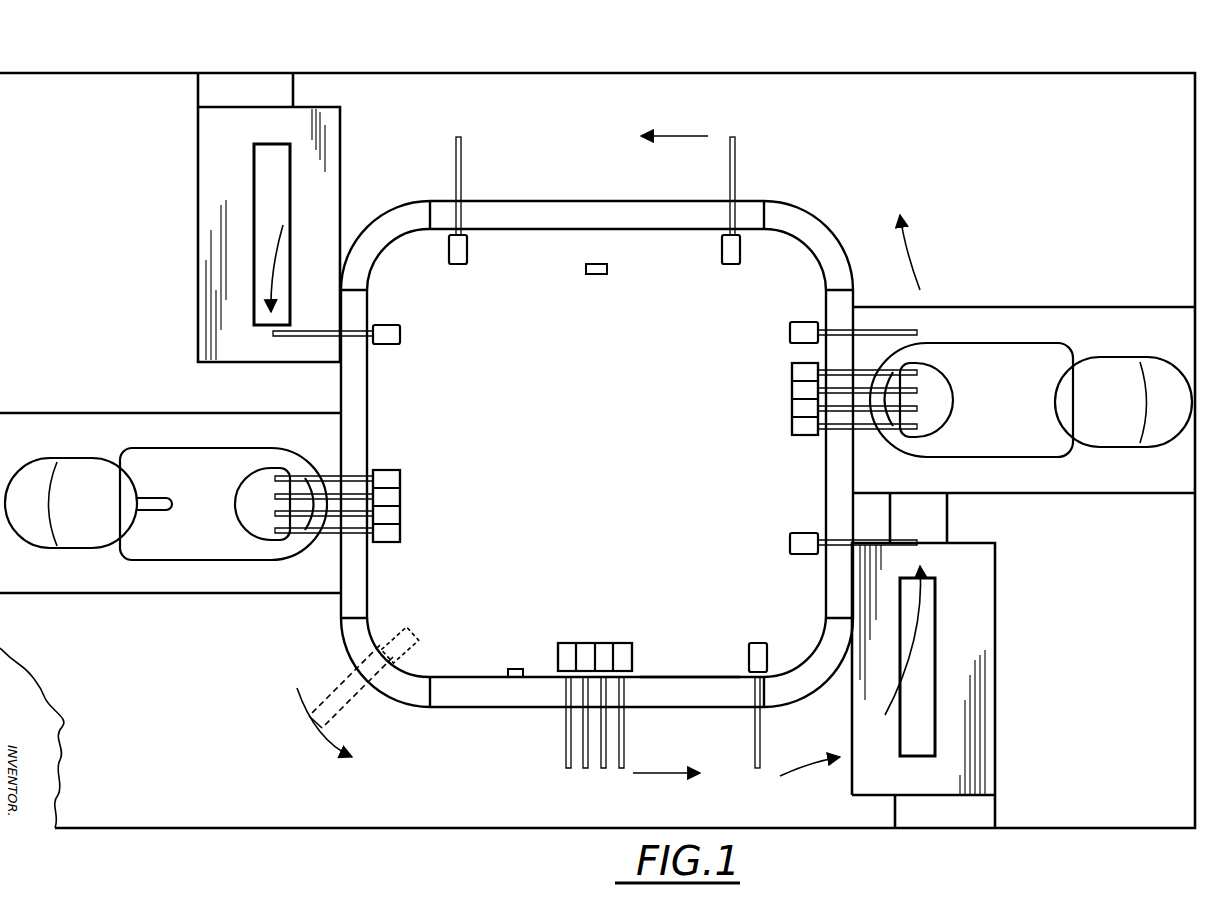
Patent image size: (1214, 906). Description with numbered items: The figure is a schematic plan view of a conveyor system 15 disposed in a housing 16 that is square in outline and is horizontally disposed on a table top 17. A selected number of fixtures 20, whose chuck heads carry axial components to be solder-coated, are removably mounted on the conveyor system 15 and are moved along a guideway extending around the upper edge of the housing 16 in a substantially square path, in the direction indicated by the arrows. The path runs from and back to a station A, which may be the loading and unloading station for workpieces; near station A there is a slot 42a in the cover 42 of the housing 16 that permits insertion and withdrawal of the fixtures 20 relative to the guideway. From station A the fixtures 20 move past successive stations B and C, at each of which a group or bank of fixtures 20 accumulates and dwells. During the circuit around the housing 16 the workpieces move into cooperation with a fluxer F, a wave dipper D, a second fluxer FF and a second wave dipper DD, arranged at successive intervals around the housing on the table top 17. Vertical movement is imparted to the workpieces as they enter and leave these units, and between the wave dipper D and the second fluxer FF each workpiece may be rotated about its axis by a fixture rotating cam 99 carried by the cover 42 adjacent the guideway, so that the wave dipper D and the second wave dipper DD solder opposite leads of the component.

The conveyor system 15 is at (500, 684).
The housing 16 is at (688, 682).
The table top 17 is at (958, 159).
The fixtures 20 is at (720, 259).
The cover 42 is at (622, 473).
The slot 42a is at (508, 668).
The fixture rotating cam 99 is at (587, 273).
The station A is at (628, 690).
The station B is at (812, 438).
The station C is at (376, 471).
The wave dipper D is at (995, 312).
The second wave dipper DD is at (128, 588).
The fluxer F is at (992, 711).
The second fluxer FF is at (328, 211).